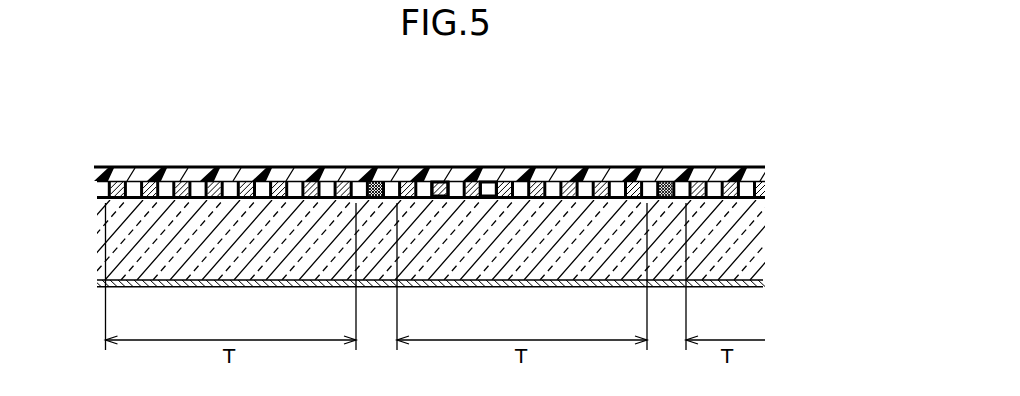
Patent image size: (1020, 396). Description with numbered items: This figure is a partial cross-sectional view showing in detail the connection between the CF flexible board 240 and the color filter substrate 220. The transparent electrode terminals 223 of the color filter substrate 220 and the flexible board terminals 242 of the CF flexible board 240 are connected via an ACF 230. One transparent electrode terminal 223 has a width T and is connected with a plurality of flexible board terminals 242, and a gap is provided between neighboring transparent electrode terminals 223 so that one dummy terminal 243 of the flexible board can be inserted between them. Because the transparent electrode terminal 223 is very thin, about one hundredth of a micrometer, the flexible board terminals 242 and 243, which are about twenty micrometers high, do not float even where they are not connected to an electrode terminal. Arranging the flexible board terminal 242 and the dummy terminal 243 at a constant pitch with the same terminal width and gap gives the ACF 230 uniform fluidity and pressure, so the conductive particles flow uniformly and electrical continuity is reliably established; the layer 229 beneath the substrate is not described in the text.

The color filter substrate 220 is at (755, 243).
The transparent electrode terminal 223 is at (202, 202).
The bottom layer 229 is at (762, 283).
The ACF 230 is at (487, 186).
The CF flexible board 240 is at (781, 180).
The flexible board terminal 242 is at (442, 188).
The dummy terminal 243 is at (377, 182).